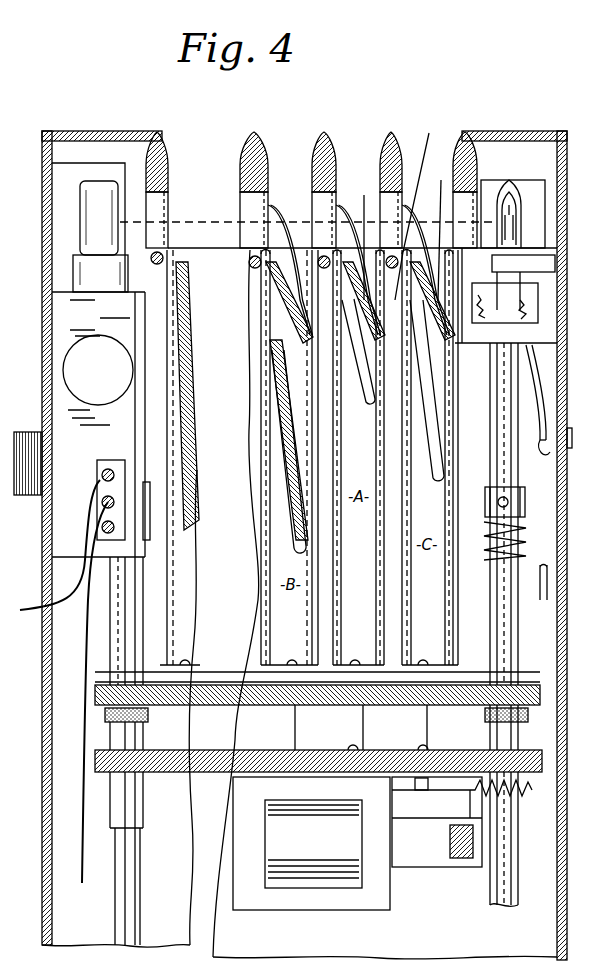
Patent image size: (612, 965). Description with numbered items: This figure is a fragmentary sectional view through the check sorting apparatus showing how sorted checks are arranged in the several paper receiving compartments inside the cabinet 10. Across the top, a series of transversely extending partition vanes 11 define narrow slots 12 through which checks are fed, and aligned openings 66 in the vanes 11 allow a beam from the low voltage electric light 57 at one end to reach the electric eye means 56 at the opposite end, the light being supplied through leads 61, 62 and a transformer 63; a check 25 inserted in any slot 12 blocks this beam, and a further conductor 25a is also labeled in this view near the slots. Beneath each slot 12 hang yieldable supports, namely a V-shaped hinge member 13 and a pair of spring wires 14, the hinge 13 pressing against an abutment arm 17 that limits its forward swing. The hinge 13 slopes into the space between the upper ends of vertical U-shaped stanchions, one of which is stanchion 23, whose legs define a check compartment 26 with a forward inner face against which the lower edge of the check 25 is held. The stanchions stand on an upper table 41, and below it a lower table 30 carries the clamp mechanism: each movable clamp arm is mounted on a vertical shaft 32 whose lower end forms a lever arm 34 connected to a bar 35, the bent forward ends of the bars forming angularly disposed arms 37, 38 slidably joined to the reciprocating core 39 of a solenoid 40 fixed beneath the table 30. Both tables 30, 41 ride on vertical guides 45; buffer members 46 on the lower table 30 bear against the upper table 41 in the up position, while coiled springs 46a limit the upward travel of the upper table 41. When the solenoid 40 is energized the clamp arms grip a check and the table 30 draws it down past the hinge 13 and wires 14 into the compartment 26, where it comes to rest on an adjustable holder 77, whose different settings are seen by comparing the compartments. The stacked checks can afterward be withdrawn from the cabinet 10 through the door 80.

The cabinet 10 is at (567, 212).
The partition vanes 11 is at (166, 150).
The slots 12 is at (288, 146).
The hinge member 13 is at (180, 272).
The spring wires 14 is at (282, 250).
The arm 17 is at (282, 262).
The stanchion 23 is at (172, 406).
The check 25 is at (362, 195).
The conductor 25a is at (441, 180).
The check compartment 26 is at (307, 348).
The lower table 30 is at (240, 754).
The vertical shaft 32 is at (362, 730).
The lever arms 34 is at (432, 795).
The bar 35 is at (418, 786).
The angularly disposed arm 37 is at (484, 820).
The angularly disposed arm 38 is at (460, 860).
The reciprocating core 39 is at (412, 870).
The solenoid 40 is at (328, 906).
The upper table 41 is at (317, 688).
The vertical guides 45 is at (492, 437).
The buffer members 46 is at (150, 716).
The coiled springs 46a is at (486, 512).
The electric eye means 56 is at (70, 305).
The electric light 57 is at (520, 200).
The lead 61 is at (548, 456).
The lead 62 is at (548, 437).
The transformer 63 is at (540, 298).
The openings 66 is at (243, 202).
The adjustable holder 77 is at (369, 407).
The door 80 is at (567, 505).